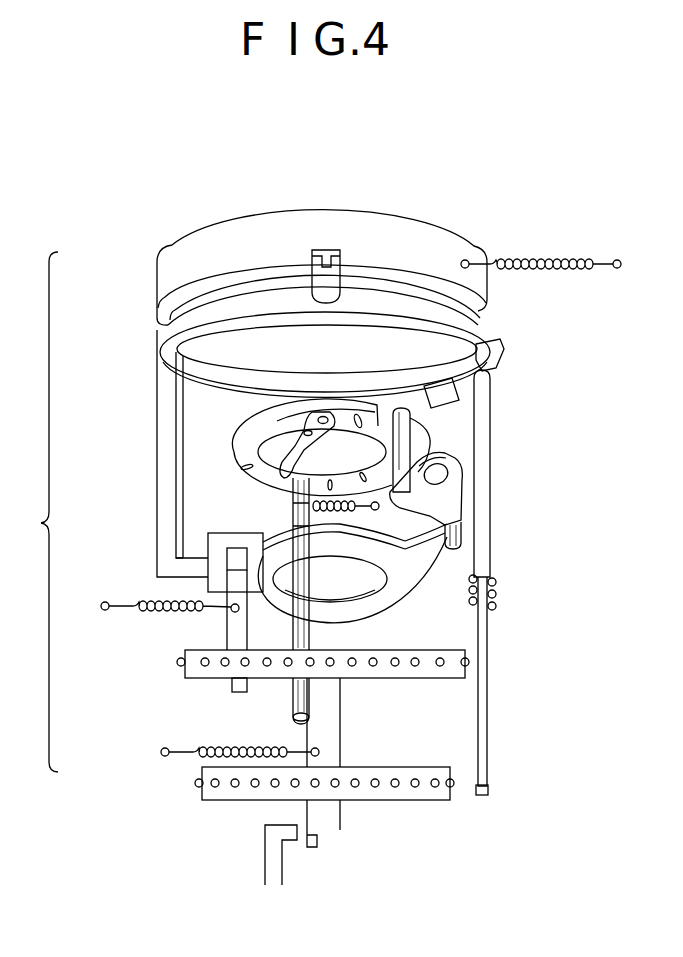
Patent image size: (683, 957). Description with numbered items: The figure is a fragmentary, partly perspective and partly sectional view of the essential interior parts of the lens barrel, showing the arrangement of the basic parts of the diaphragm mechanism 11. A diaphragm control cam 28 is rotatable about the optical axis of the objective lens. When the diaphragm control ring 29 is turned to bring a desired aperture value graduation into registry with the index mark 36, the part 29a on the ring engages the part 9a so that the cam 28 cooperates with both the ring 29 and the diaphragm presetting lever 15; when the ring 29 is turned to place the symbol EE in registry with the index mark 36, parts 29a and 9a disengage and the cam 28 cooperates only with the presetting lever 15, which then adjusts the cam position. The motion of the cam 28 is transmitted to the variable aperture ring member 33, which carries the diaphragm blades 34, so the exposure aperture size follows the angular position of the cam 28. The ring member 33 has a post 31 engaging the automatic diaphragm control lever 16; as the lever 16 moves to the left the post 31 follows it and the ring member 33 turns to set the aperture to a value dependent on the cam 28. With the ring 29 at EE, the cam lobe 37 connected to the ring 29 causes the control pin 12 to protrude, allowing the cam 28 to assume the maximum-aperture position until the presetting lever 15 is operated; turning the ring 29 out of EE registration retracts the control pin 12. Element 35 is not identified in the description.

The engaging part of diaphragm presetting lever 9a is at (229, 546).
The diaphragm mechanism 11 is at (39, 512).
The control pin 12 is at (485, 727).
The diaphragm presetting lever 15 is at (232, 680).
The automatic diaphragm control lever 16 is at (318, 838).
The diaphragm control cam 28 is at (403, 574).
The diaphragm control ring 29 is at (177, 272).
The engaging part of diaphragm control ring 29a is at (190, 572).
The post 31 is at (303, 633).
The variable aperture ring member 33 is at (276, 429).
The diaphragm blades 34 is at (272, 450).
The cam lever 35 is at (458, 501).
The index mark 36 is at (333, 207).
The cam lobe 37 is at (499, 354).